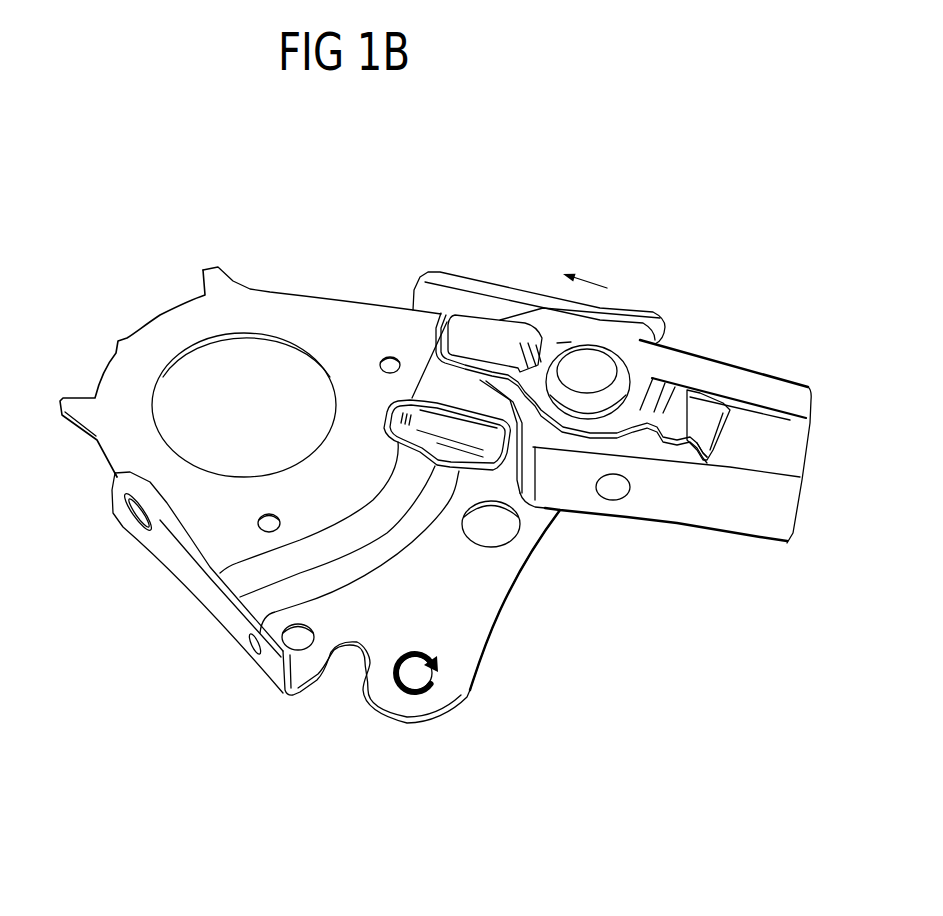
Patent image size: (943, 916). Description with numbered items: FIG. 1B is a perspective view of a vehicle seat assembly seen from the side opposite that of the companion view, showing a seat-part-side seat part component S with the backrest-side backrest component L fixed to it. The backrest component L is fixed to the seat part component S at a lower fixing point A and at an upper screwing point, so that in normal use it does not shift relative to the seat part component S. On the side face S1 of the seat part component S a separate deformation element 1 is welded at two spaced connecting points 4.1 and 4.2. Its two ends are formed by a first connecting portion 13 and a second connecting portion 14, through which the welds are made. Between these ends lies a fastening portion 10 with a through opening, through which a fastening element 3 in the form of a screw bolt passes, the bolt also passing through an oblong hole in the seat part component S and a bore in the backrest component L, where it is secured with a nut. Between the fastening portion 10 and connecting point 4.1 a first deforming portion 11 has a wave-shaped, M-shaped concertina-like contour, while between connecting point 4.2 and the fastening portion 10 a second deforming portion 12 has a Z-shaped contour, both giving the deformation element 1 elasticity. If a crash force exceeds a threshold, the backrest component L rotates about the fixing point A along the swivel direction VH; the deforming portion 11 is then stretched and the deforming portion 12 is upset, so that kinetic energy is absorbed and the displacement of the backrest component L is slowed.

The backrest component L is at (277, 300).
The deformation element 1 is at (647, 368).
The fastening element 3 is at (587, 405).
The connecting point 4.1 is at (712, 462).
The connecting point 4.2 is at (445, 314).
The fastening portion 10 is at (629, 358).
The first deforming portion 11 is at (667, 393).
The second deforming portion 12 is at (534, 336).
The first connecting portion 13 is at (730, 437).
The second connecting portion 14 is at (487, 328).
The seat part component S is at (763, 548).
The side face S1 is at (750, 433).
The fixing point A is at (436, 672).
The swivel direction VH is at (414, 690).